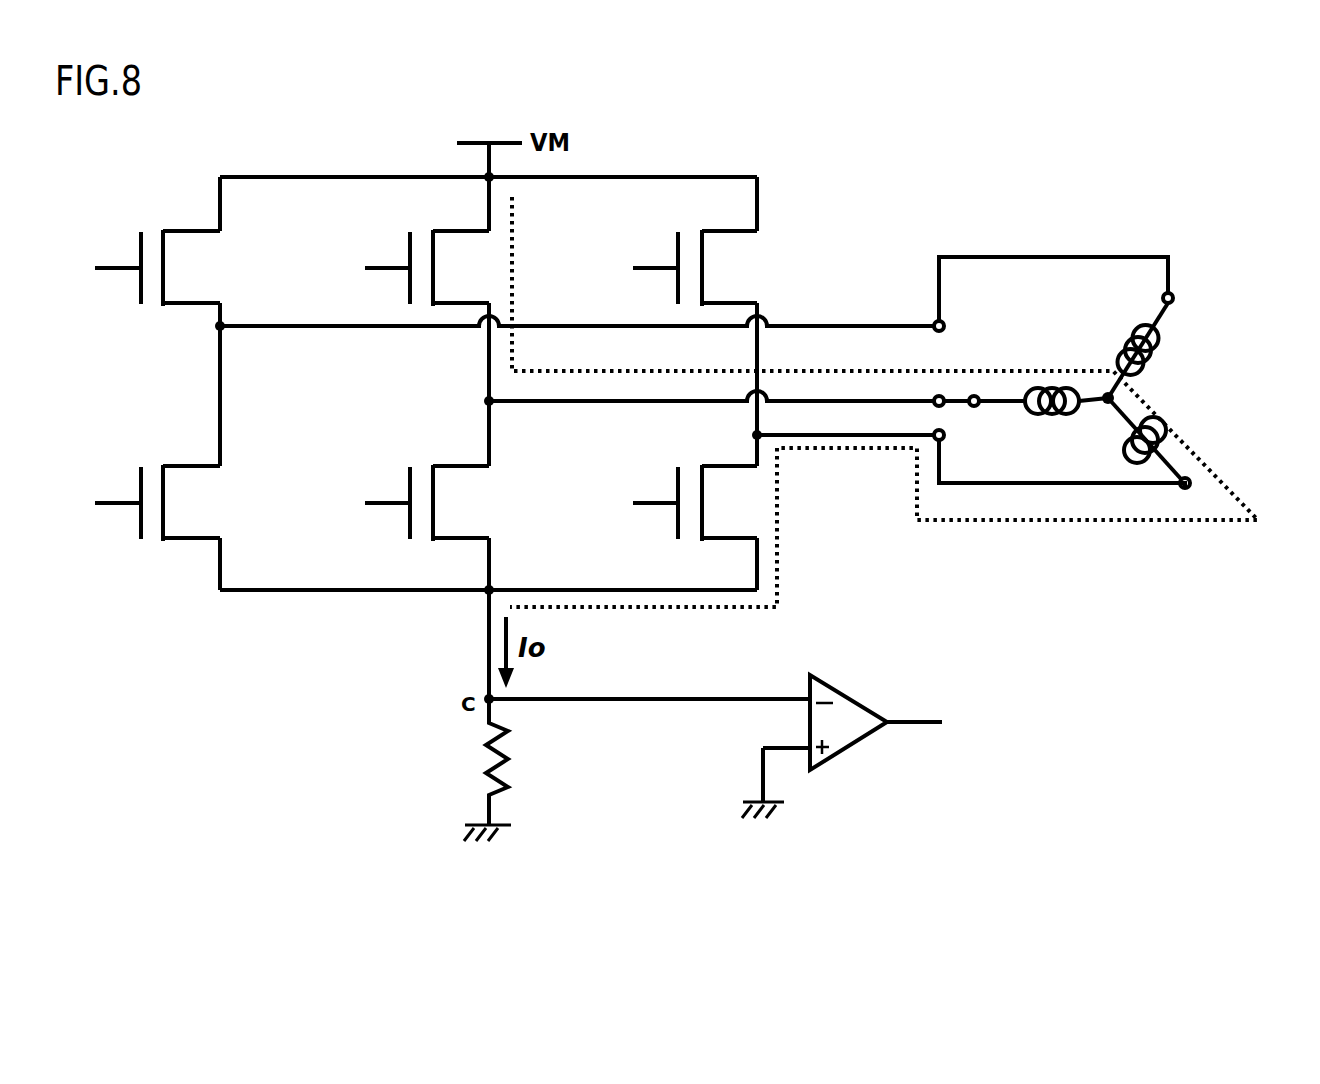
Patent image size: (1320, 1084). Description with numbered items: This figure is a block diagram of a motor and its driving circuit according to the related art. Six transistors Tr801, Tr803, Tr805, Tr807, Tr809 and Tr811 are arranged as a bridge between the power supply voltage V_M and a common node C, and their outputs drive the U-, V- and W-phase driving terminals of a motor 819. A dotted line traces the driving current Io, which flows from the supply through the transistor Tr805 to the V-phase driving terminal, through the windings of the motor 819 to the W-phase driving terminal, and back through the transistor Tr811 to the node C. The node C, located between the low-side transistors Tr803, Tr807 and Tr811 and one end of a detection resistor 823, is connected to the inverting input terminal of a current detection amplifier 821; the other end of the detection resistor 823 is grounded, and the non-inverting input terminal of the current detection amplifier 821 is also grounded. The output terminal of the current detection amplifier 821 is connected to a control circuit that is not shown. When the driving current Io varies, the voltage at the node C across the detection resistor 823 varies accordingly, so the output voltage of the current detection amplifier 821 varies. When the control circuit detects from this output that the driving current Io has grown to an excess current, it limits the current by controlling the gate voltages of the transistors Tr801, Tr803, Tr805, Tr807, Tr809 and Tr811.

The transistor Tr801 is at (157, 252).
The transistor Tr803 is at (156, 486).
The transistor Tr805 is at (427, 254).
The transistor Tr807 is at (427, 490).
The transistor Tr809 is at (695, 254).
The transistor Tr811 is at (695, 490).
The motor 819 is at (1080, 352).
The current detection amplifier 821 is at (873, 710).
The detection resistor 823 is at (478, 769).